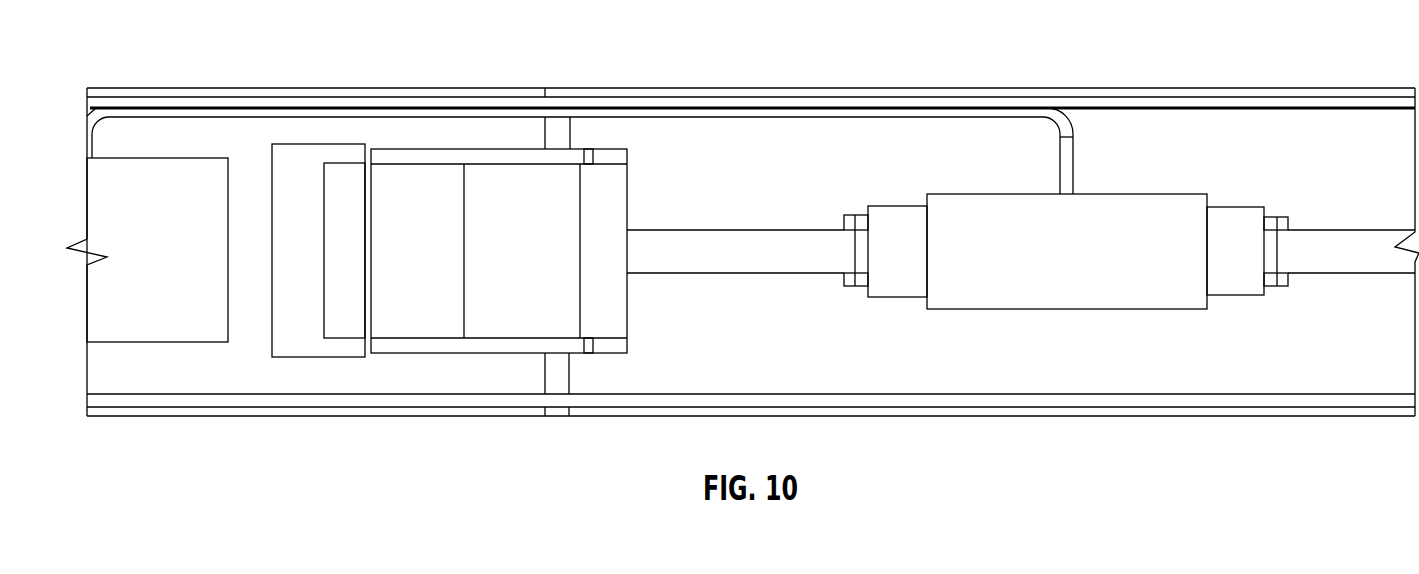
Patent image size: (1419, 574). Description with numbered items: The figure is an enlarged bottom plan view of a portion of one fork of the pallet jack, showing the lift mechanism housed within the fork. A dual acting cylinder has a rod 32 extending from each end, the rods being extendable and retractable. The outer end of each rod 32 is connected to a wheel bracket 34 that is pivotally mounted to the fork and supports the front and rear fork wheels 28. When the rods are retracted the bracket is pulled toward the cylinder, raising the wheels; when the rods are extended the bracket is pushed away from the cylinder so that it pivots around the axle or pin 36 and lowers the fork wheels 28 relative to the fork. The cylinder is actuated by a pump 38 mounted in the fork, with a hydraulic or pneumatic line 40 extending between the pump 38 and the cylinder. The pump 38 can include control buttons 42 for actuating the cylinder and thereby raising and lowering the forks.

The fork wheel 28 is at (345, 163).
The rod 32 is at (253, 108).
The wheel bracket 34 is at (498, 149).
The axle or pin 36 is at (558, 128).
The pump 38 is at (1107, 203).
The hydraulic or pneumatic line 40 is at (988, 106).
The control buttons 42 is at (143, 158).